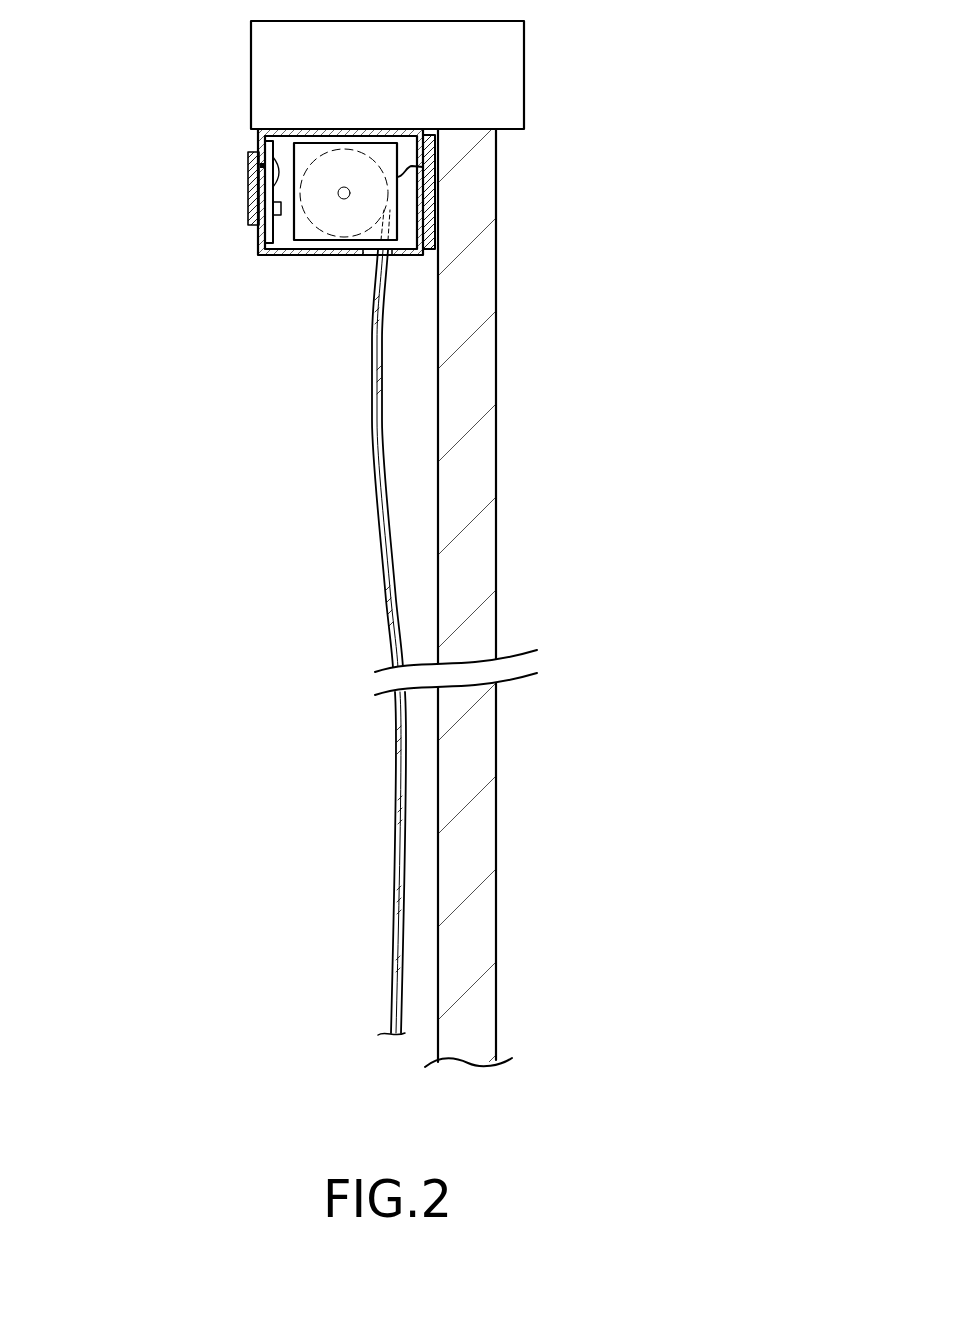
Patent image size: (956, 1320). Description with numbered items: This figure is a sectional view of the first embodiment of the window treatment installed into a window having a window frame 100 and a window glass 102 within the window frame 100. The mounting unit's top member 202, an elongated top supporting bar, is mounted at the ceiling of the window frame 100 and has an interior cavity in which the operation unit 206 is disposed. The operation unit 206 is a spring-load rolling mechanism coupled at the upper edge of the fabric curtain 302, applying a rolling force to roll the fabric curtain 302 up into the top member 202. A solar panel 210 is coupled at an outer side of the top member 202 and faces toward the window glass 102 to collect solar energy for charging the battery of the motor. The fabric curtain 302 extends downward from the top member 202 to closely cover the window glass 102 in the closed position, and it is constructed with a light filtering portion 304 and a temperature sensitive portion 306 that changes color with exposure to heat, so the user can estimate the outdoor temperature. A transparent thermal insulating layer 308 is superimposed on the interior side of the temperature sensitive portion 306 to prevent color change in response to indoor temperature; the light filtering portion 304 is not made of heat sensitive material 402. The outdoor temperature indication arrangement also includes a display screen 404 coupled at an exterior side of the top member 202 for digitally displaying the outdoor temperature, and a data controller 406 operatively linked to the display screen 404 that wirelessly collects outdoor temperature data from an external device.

The window frame 100 is at (492, 80).
The window glass 102 is at (475, 477).
The top member 202 is at (295, 131).
The operation unit 206 is at (332, 240).
The solar panel 210 is at (430, 217).
The fabric curtain 302 is at (241, 642).
The light filtering portion 304 is at (372, 335).
The temperature sensitive portion 306 is at (382, 572).
The thermal insulating layer 308 is at (375, 492).
The heat sensitive material 402 is at (321, 851).
The display screen 404 is at (253, 195).
The data controller 406 is at (270, 228).